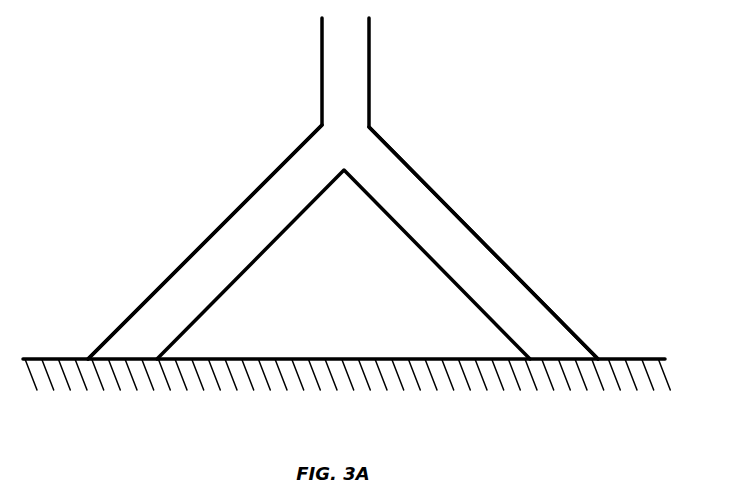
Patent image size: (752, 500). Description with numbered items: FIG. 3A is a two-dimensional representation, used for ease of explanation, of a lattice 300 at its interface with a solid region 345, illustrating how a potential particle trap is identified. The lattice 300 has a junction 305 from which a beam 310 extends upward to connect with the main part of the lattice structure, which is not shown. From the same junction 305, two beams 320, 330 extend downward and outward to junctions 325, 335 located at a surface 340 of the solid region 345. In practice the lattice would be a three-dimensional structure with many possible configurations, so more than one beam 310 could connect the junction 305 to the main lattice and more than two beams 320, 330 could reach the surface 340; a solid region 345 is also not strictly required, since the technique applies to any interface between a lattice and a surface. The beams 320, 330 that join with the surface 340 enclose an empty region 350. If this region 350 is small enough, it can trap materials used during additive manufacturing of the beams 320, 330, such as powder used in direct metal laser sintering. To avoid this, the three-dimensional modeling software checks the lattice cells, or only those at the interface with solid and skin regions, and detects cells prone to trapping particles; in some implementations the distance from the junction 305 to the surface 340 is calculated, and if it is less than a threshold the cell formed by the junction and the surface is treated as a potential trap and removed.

The lattice 300 is at (199, 56).
The junction 305 is at (343, 145).
The beam 310 is at (371, 72).
The beam 320 is at (167, 273).
The junction 325 is at (123, 358).
The beam 330 is at (545, 293).
The junction 335 is at (573, 358).
The surface 340 is at (656, 358).
The solid region 345 is at (632, 397).
The empty region 350 is at (405, 270).